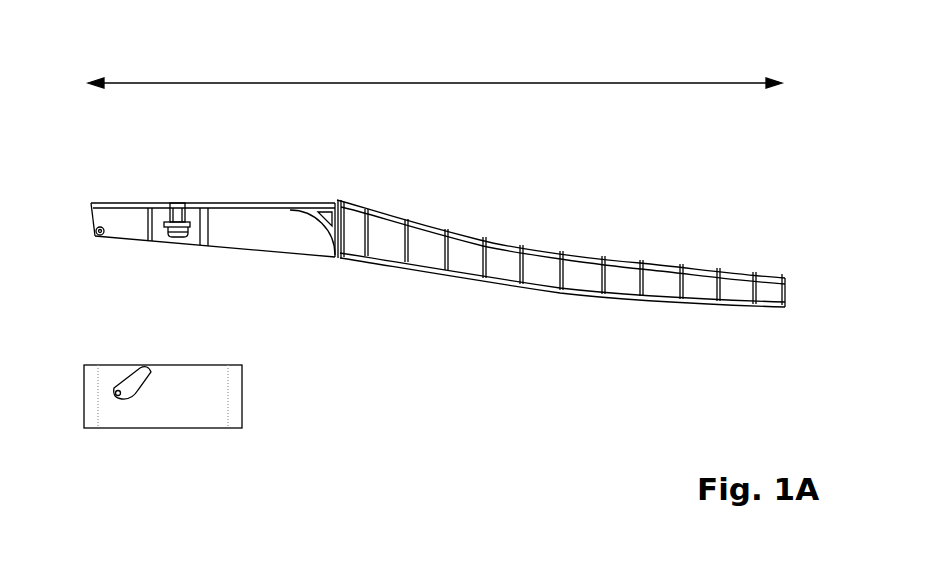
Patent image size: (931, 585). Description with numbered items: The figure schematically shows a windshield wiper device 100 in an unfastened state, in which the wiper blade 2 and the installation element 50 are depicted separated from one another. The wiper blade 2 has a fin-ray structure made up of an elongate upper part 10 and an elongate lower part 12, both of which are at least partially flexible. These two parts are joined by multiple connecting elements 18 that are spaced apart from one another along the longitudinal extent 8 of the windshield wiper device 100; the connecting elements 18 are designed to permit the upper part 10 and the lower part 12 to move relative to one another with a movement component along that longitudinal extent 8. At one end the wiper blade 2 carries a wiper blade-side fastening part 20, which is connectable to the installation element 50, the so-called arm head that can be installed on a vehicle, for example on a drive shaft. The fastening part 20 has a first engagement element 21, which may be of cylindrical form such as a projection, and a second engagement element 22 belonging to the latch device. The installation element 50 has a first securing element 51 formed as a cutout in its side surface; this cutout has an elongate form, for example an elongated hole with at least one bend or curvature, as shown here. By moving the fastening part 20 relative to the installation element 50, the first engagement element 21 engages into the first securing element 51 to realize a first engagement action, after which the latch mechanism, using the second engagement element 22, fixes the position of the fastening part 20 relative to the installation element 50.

The windshield wiper device 100 is at (127, 29).
The longitudinal extent 8 is at (458, 83).
The wiper blade 2 is at (540, 221).
The elongate upper part 10 is at (617, 266).
The elongate lower part 12 is at (565, 297).
The connecting elements 18 is at (717, 286).
The wiper blade-side fastening part 20 is at (169, 211).
The first engagement element 21 is at (100, 236).
The second engagement element 22 is at (172, 238).
The installation element 50 is at (172, 412).
The first securing element 51 is at (146, 370).